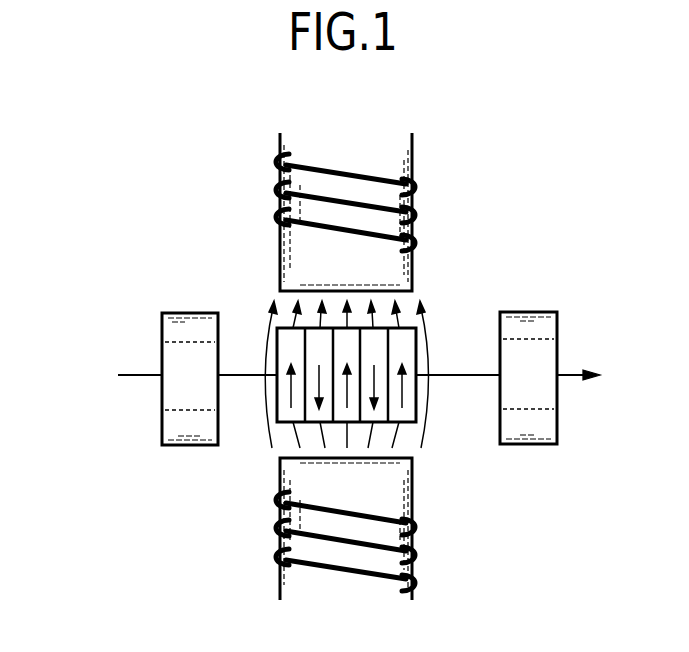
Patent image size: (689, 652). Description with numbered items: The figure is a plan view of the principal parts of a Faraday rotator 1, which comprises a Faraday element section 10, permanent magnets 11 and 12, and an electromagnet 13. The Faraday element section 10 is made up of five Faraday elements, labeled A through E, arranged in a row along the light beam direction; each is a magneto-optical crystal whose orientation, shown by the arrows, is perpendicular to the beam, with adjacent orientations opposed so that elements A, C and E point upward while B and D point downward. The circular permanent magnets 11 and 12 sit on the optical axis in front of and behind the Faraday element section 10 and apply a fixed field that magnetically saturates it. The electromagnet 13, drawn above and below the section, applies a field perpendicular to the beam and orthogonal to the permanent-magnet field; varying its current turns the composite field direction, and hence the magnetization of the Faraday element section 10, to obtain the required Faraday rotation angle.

The Faraday rotator 1 is at (517, 183).
The Faraday element section 10 is at (417, 343).
The permanent magnet 11 is at (188, 312).
The permanent magnet 12 is at (530, 310).
The electromagnet 13 is at (280, 140).